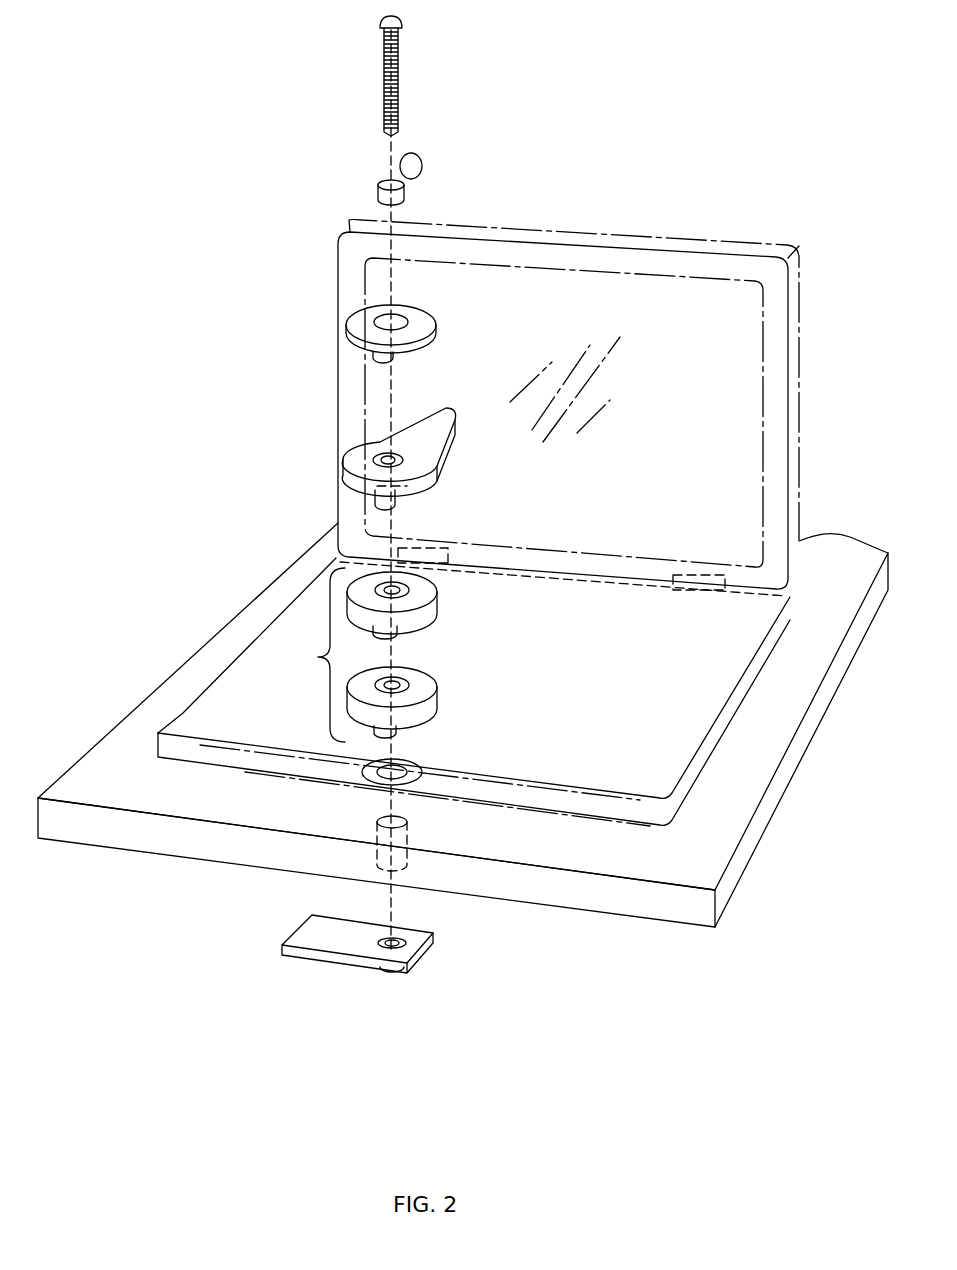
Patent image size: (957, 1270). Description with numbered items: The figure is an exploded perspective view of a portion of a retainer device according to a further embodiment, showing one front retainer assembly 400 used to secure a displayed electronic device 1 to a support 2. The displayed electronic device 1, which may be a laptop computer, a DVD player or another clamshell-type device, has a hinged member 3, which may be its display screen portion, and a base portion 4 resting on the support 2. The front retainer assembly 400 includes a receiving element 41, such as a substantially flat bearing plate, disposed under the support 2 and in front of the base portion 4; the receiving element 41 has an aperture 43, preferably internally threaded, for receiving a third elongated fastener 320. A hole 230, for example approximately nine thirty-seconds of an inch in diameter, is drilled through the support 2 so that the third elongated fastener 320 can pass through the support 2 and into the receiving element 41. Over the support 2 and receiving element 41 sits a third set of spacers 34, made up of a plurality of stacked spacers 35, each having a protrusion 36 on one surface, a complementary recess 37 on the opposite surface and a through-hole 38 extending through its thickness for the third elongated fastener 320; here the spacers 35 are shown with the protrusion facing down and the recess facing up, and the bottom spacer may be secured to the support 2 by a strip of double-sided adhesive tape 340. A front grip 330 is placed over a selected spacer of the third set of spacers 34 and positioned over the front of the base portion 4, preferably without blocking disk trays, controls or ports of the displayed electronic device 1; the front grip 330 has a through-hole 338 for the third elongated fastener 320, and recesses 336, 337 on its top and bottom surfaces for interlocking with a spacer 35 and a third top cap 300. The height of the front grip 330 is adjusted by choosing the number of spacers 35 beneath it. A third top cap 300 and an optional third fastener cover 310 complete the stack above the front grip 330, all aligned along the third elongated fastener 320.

The displayed electronic device 1 is at (213, 672).
The support 2 is at (700, 867).
The hinged member 3 is at (727, 533).
The base portion 4 is at (652, 766).
The third set of spacers 34 is at (320, 657).
The spacer 35 is at (437, 604).
The protrusion 36 is at (398, 632).
The complementary recess 37 is at (400, 680).
The through-hole 38 is at (390, 586).
The receiving element 41 is at (420, 947).
The aperture 43 is at (386, 946).
The hole 230 is at (375, 823).
The third top cap 300 is at (347, 334).
The third fastener cover 310 is at (378, 190).
The third elongated fastener 320 is at (385, 95).
The front grip 330 is at (345, 465).
The recess 336 is at (378, 508).
The recess 337 is at (380, 442).
The through-hole 338 is at (386, 452).
The double-sided adhesive tape 340 is at (420, 769).
The front retainer assembly 400 is at (216, 393).